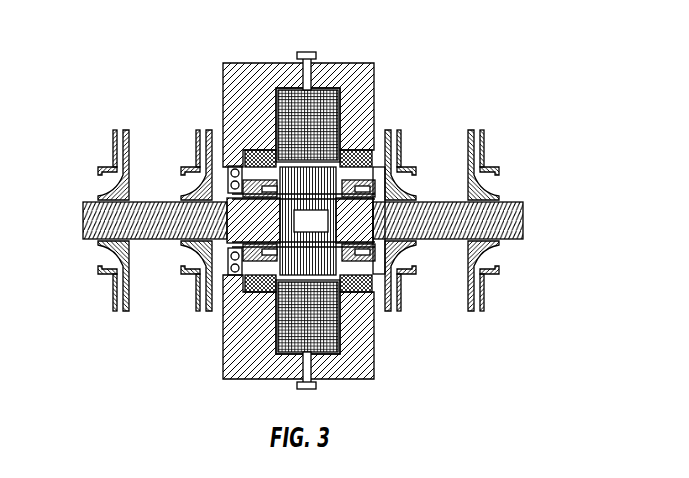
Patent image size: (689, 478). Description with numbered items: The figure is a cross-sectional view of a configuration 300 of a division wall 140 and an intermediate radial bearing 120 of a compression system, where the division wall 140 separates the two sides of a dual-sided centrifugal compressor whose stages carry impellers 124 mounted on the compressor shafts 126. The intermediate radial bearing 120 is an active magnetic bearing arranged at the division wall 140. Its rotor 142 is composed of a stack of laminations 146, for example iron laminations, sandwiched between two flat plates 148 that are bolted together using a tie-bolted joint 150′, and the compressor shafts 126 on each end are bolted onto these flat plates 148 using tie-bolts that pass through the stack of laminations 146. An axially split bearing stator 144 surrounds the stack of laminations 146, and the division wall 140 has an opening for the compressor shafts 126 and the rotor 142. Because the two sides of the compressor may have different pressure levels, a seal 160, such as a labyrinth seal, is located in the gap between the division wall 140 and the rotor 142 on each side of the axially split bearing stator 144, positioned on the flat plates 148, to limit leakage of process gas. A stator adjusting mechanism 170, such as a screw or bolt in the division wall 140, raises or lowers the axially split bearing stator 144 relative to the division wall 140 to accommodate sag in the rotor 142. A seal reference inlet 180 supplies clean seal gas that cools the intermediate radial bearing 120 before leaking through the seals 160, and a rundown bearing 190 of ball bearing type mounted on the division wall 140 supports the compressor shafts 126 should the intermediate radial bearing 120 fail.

The configuration 300 is at (127, 32).
The intermediate radial bearing 120 is at (345, 103).
The impeller 124 is at (514, 120).
The compressor shaft 126 is at (82, 220).
The division wall 140 is at (364, 63).
The rotor 142 is at (394, 280).
The axially split bearing stator 144 is at (297, 108).
The stack of laminations 146 is at (326, 230).
The flat plate 148 is at (262, 290).
The tie-bolted joint 150′ is at (352, 152).
The seal 160 is at (262, 150).
The stator adjusting mechanism 170 is at (313, 368).
The seal reference inlet 180 is at (287, 85).
The rundown bearing 190 is at (228, 172).